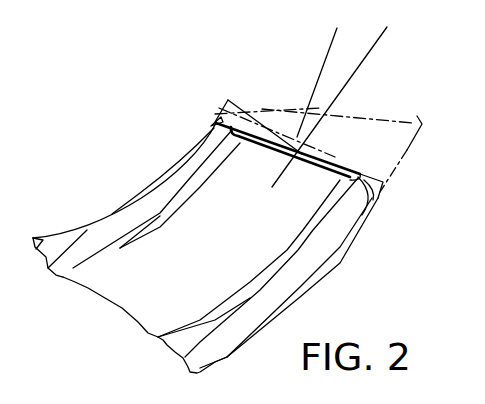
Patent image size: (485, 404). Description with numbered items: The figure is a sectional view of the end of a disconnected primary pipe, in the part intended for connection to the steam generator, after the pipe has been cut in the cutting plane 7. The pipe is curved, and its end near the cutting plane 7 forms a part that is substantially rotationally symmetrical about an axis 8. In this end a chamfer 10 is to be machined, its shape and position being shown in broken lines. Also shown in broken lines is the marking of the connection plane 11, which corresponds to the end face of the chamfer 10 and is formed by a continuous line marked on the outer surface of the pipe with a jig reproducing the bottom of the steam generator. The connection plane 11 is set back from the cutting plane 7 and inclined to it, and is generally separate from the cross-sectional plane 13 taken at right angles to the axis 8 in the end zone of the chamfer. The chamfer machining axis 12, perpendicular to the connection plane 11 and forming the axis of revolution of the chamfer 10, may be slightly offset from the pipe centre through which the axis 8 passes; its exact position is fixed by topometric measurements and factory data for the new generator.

The cutting plane 7 is at (417, 116).
The axis 8 is at (360, 68).
The chamfer 10 is at (211, 126).
The connection plane 11 is at (366, 177).
The chamfer machining axis 12 is at (320, 68).
The cross-sectional plane 13 is at (362, 213).